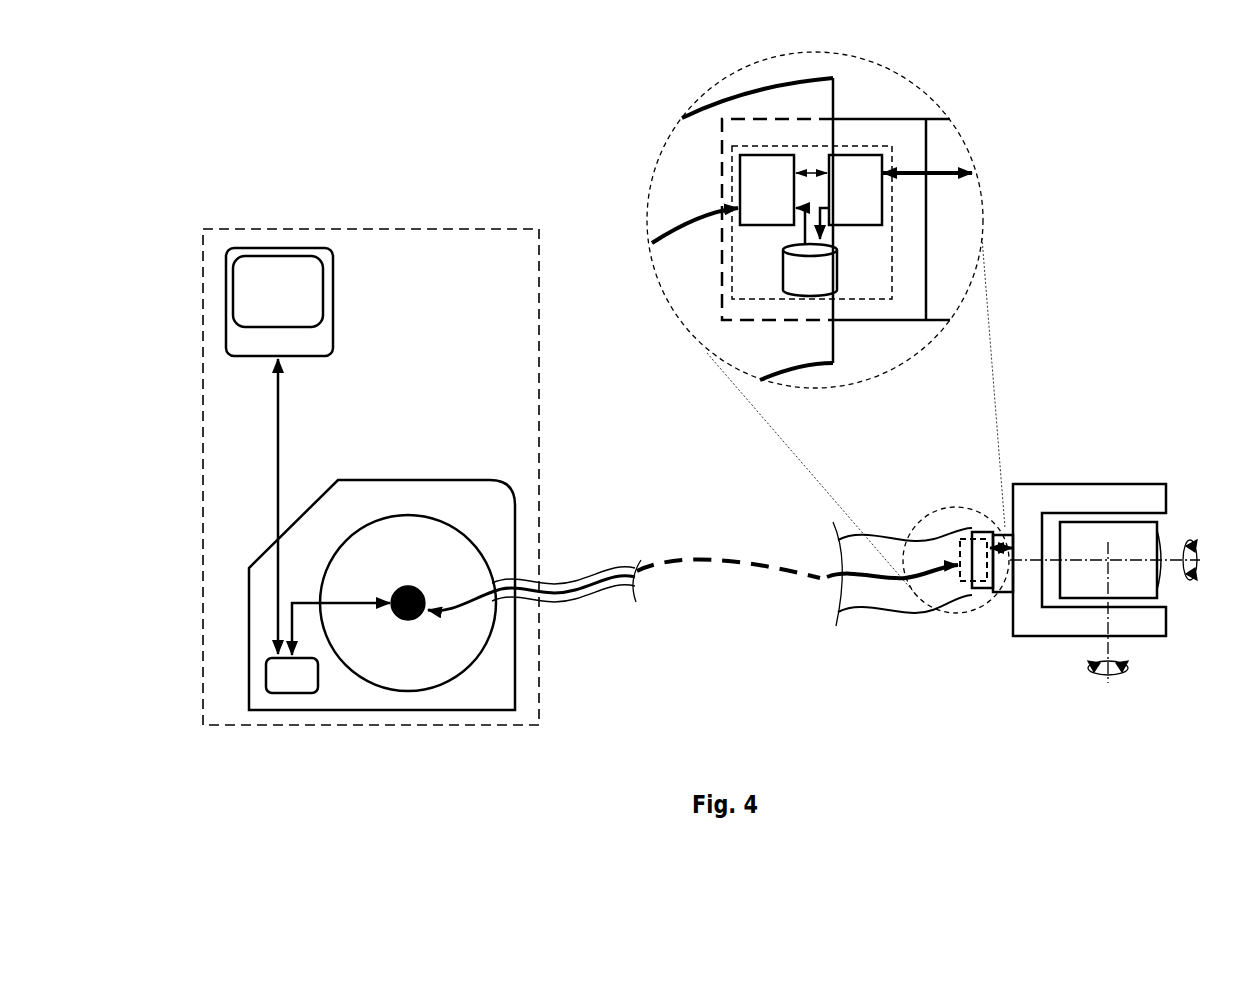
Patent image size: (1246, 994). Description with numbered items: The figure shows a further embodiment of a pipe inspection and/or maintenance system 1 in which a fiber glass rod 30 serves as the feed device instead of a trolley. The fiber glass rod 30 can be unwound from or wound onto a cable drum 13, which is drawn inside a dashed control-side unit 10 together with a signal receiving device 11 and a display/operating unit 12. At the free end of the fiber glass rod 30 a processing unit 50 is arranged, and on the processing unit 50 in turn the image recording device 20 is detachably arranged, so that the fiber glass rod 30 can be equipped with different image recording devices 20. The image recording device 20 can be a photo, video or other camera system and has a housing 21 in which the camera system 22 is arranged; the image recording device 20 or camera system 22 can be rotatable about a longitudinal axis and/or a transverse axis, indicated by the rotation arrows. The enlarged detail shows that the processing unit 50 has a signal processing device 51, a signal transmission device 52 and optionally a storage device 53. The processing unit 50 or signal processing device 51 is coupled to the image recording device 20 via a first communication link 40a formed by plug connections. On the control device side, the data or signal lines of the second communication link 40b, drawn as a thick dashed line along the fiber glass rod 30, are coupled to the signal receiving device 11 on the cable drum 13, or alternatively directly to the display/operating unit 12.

The pipe inspection and/or maintenance system 1 is at (506, 114).
The control unit / base station 10 is at (541, 388).
The signal receiving device 11 is at (293, 697).
The display/operating unit 12 is at (329, 249).
The cable drum 13 is at (479, 544).
The image recording device 20 is at (1105, 533).
The housing 21 is at (1099, 486).
The camera system 22 is at (1149, 521).
The fiber glass rod 30 is at (879, 617).
The first communication link 40a is at (1000, 560).
The second communication link 40b is at (728, 557).
The processing unit 50 is at (968, 533).
The signal processing device 51 is at (881, 154).
The signal transmission device 52 is at (747, 156).
The storage device 53 is at (823, 281).